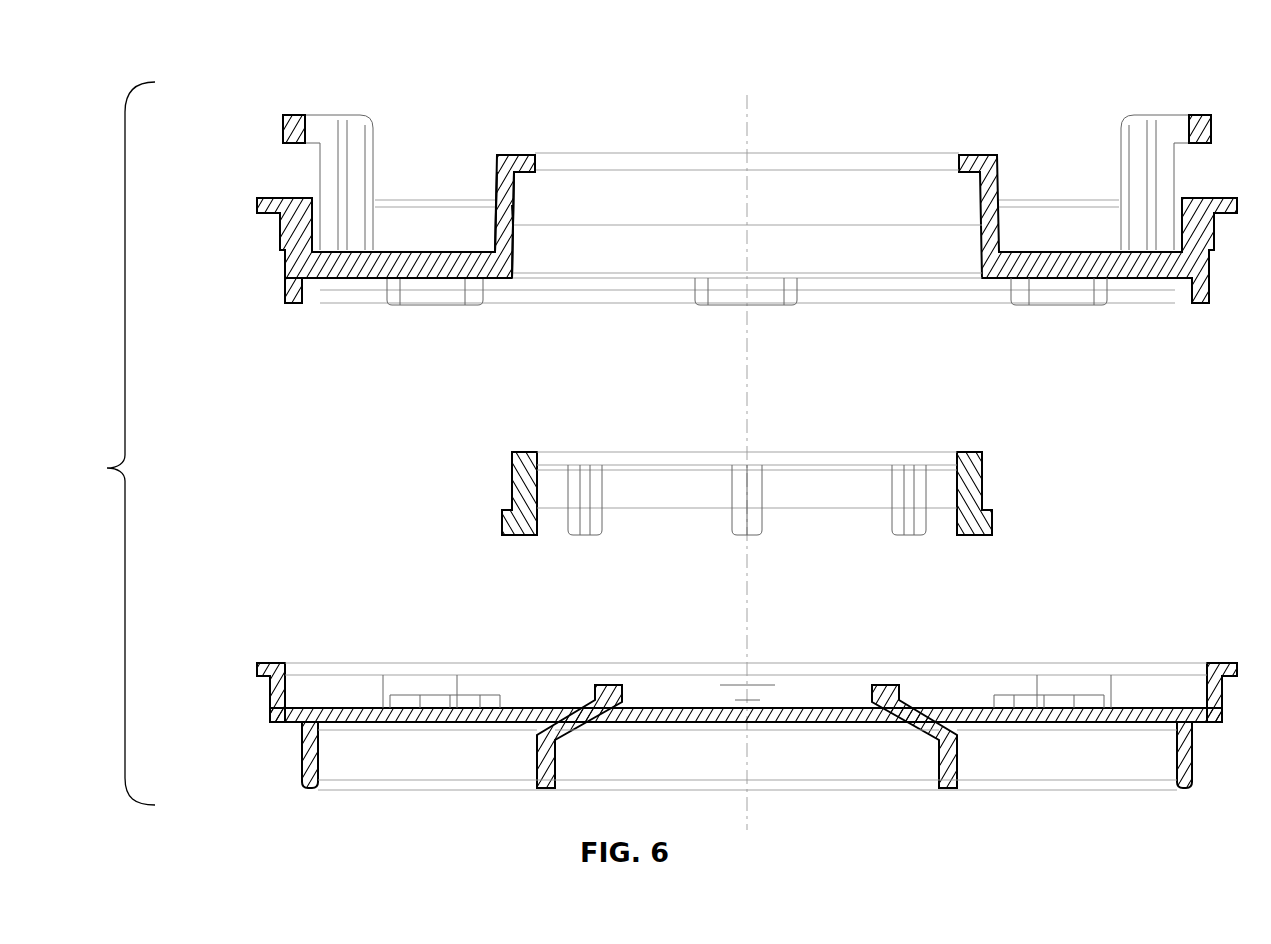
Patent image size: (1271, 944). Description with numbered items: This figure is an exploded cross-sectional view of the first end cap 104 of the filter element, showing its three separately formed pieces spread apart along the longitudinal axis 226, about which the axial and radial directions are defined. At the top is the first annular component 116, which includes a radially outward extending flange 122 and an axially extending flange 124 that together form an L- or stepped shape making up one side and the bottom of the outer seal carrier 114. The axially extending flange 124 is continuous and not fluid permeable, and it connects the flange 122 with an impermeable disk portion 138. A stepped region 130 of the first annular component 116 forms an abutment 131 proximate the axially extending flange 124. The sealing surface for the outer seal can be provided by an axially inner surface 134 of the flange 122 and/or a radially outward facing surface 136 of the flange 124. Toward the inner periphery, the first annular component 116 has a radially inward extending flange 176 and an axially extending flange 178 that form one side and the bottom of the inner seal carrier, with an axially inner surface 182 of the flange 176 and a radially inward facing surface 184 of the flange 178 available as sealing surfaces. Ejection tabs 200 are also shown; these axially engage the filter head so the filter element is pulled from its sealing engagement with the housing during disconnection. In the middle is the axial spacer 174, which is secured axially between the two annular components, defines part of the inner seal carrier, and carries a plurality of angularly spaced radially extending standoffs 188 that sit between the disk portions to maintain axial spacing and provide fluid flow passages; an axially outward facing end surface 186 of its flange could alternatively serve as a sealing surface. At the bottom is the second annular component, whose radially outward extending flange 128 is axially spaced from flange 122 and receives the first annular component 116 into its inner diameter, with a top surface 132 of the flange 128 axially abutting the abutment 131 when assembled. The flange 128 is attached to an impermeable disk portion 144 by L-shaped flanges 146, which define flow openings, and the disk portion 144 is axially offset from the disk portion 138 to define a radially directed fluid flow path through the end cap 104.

The first end cap 104 is at (108, 443).
The first annular component 116 is at (1003, 140).
The outer seal carrier 114 is at (1097, 635).
The axial spacer 174 is at (1005, 452).
The ejection tabs 200 is at (288, 117).
The axially extending flange 124 is at (302, 218).
The stepped region 130 is at (300, 249).
The impermeable disk portion 138 is at (427, 263).
The axially extending flange 178 is at (500, 197).
The radially inward extending flange 176 is at (519, 157).
The axially inner surface 182 is at (525, 172).
The radially inward facing surface 184 is at (512, 207).
The radially outward extending flange 122 is at (257, 205).
The axially inner surface 134 is at (276, 214).
The radially outward facing surface 136 is at (281, 247).
The abutment 131 is at (284, 268).
The longitudinal axis 226 is at (758, 118).
The axially outward facing end surface 186 is at (525, 455).
The radially extending standoffs 188 is at (505, 518).
The top surface 132 is at (258, 665).
The radially outward extending flange 128 is at (262, 678).
The flanges 146 is at (272, 692).
The impermeable disk portion 144 is at (397, 714).